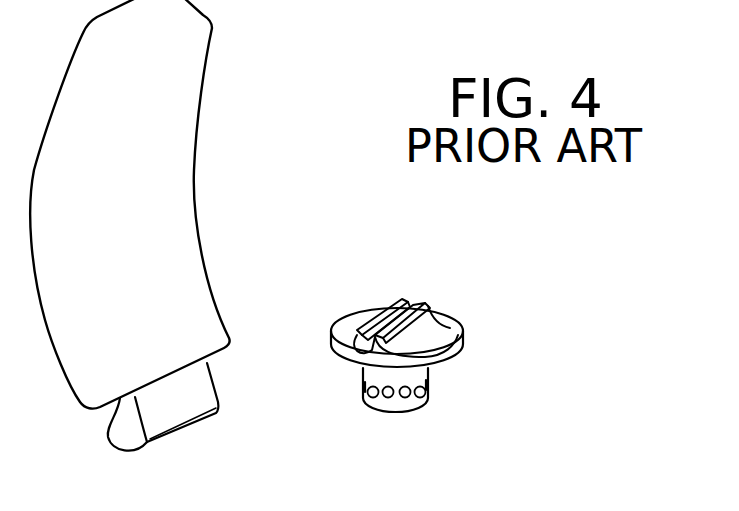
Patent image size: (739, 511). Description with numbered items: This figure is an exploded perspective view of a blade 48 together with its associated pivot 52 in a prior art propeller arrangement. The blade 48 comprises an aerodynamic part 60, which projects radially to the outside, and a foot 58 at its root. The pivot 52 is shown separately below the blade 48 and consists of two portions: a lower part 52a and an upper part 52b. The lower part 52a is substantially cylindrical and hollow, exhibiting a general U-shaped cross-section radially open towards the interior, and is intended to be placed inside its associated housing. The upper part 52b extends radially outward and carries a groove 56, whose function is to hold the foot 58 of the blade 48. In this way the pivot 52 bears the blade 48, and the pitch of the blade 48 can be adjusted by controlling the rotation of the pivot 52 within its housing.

The blade 48 is at (193, 236).
The aerodynamic part 60 is at (195, 153).
The foot 58 is at (127, 435).
The pivot 52 is at (417, 334).
The upper part 52b is at (450, 353).
The lower part 52a is at (427, 388).
The groove 56 is at (367, 350).